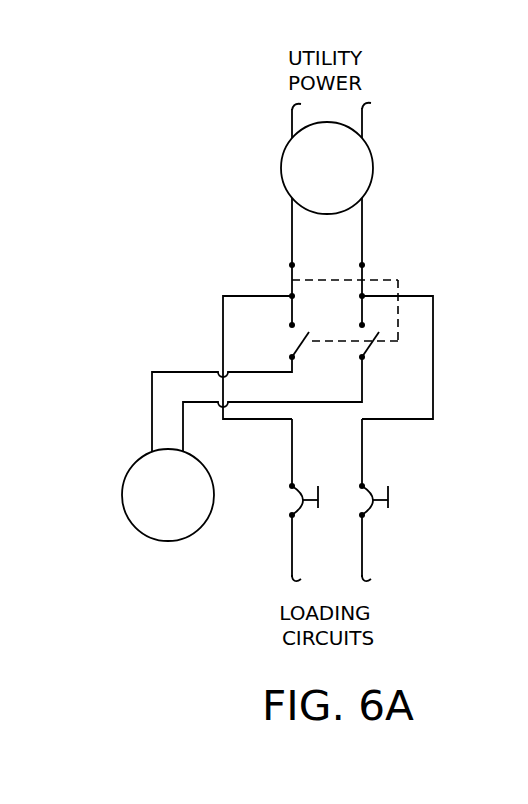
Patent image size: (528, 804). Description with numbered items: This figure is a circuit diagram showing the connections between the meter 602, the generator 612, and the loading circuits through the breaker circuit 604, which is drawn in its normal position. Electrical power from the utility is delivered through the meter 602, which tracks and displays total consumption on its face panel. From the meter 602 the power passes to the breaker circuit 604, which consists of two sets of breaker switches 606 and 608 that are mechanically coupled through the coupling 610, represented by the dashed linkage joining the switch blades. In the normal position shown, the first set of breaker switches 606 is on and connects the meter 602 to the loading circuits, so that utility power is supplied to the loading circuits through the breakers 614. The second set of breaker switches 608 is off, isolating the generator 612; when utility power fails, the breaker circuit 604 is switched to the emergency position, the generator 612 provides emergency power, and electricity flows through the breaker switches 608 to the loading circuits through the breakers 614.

The meter 602 is at (373, 160).
The breaker circuit 604 is at (357, 291).
The first set of breaker switches 606 is at (291, 280).
The second set of breaker switches 608 is at (300, 343).
The coupling 610 is at (402, 288).
The generator 612 is at (126, 475).
The breakers 614 is at (366, 484).